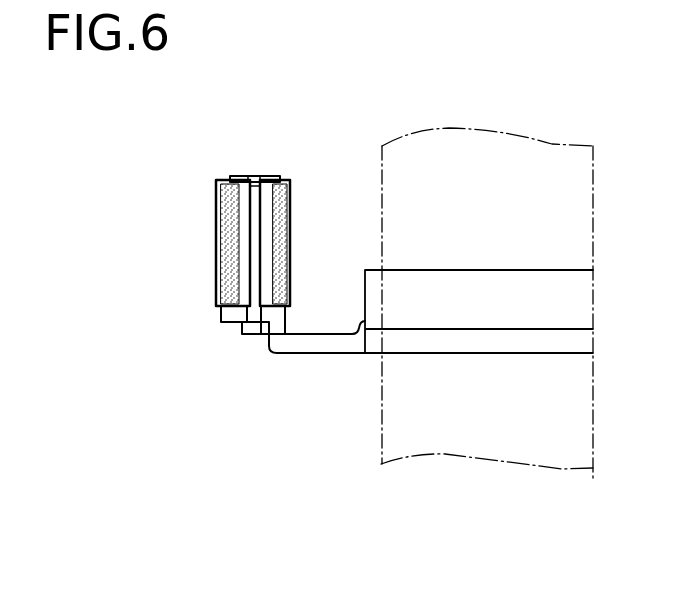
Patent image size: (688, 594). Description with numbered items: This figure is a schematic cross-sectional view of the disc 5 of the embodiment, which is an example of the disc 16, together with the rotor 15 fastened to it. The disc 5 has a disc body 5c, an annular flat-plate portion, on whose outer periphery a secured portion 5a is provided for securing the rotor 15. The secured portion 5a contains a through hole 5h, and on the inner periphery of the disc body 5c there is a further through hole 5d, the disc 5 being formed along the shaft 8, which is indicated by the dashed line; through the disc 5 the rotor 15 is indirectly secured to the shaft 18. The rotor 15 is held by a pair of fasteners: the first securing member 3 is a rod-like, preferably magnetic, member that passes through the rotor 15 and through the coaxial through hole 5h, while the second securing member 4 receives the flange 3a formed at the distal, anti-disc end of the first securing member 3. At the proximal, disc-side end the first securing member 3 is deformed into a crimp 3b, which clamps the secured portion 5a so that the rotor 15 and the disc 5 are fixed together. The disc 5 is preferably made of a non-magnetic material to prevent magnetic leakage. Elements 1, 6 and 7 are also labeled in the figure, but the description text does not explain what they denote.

The heat exchanger core 1 is at (268, 218).
The first securing member 3 is at (258, 252).
The flange 3a is at (253, 177).
The crimp 3b is at (266, 327).
The second securing member 4 is at (272, 177).
The left elastic member 6 is at (230, 283).
The right elastic member 7 is at (275, 237).
The rotor 15 is at (142, 215).
The disc 5 is at (288, 390).
The disc 16 is at (355, 418).
The secured portion 5a is at (232, 322).
The through hole 5h is at (250, 334).
The disc body 5c is at (323, 340).
The through hole 5d is at (379, 295).
The shaft 8 is at (471, 269).
The shaft 18 is at (380, 217).